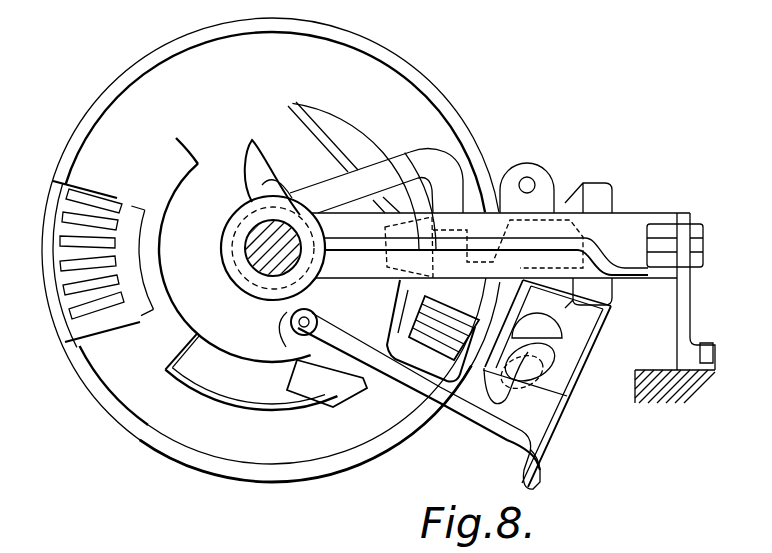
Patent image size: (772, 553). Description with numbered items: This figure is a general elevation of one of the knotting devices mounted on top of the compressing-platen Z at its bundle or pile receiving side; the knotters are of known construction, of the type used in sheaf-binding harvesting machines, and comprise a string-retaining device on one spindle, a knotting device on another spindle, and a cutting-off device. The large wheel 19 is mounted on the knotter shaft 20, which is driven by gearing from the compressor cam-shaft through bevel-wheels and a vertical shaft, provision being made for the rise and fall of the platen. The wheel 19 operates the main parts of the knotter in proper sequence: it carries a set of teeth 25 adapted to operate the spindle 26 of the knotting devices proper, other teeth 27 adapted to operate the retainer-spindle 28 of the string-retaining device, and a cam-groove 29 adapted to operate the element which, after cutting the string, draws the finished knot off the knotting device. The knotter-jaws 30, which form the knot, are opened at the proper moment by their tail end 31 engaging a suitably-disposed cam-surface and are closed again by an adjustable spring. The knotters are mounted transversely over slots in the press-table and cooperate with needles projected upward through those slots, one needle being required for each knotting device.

The wheel 19 is at (221, 466).
The shaft 20 is at (271, 228).
The teeth 25 is at (93, 284).
The spindle 26 is at (405, 322).
The teeth 27 is at (183, 322).
The retainer-spindle 28 is at (508, 222).
The cam-groove 29 is at (272, 249).
The knotter-jaws 30 is at (533, 368).
The tail end 31 is at (532, 327).
The compressing-platen Z is at (690, 385).